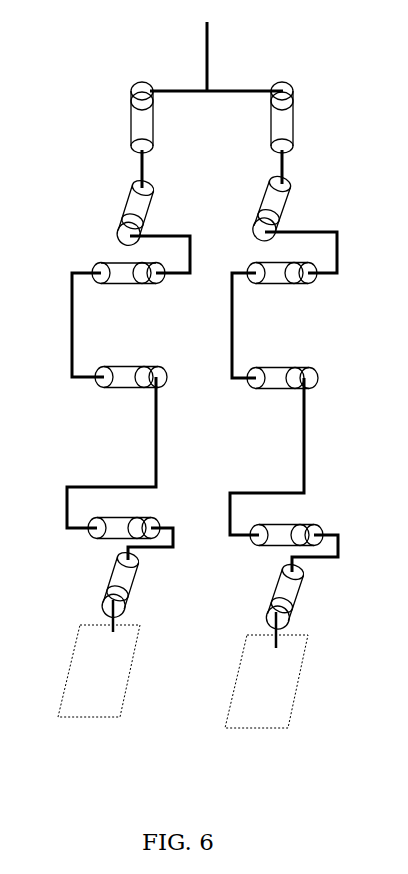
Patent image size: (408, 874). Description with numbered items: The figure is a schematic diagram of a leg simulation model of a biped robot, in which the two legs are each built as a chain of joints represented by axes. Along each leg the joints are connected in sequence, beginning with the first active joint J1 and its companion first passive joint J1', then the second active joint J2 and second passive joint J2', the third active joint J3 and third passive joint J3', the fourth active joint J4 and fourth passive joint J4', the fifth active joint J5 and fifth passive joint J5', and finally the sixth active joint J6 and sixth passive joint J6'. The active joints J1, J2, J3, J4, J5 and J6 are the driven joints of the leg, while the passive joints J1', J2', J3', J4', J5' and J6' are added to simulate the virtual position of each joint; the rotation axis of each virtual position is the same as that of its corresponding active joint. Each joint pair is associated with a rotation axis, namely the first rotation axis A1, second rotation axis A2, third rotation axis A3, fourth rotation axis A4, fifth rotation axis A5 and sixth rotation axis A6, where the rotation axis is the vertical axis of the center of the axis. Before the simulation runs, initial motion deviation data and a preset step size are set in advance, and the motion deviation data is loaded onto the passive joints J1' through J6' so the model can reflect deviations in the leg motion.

The first active joint J1 is at (124, 95).
The first passive joint J1' is at (117, 155).
The first rotation axis A1 is at (159, 119).
The second active joint J2 is at (122, 195).
The second passive joint J2' is at (109, 238).
The second rotation axis A2 is at (156, 217).
The third rotation axis A3 is at (106, 306).
The third active joint J3 is at (153, 292).
The third passive joint J3' is at (97, 292).
The fourth active joint J4 is at (108, 364).
The fourth passive joint J4' is at (124, 434).
The fourth rotation axis A4 is at (93, 384).
The fifth active joint J5 is at (90, 516).
The fifth passive joint J5' is at (155, 516).
The fifth rotation axis A5 is at (99, 539).
The sixth active joint J6 is at (107, 567).
The sixth passive joint J6' is at (85, 616).
The sixth rotation axis A6 is at (138, 594).